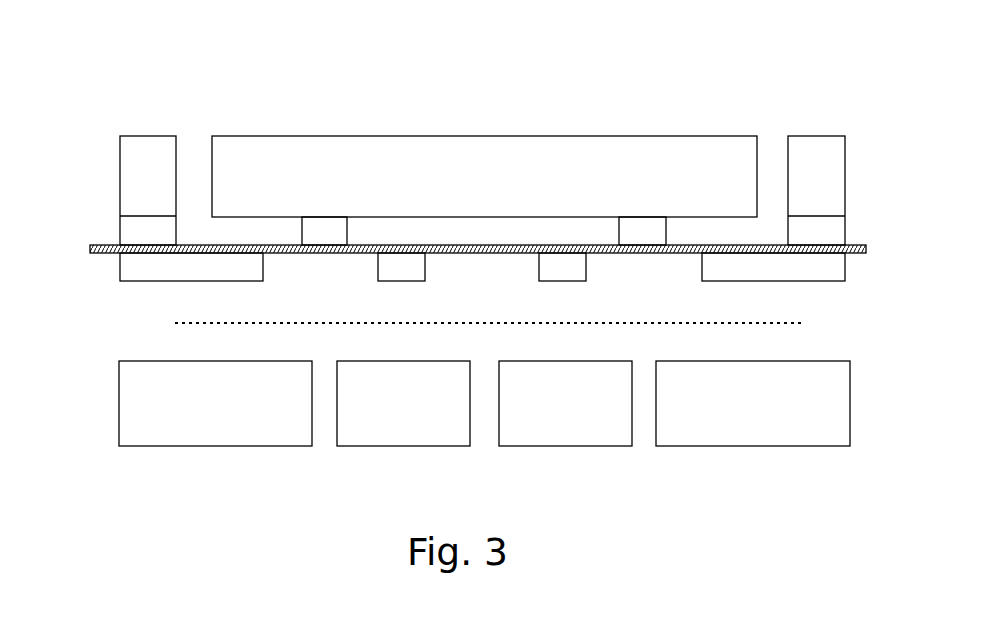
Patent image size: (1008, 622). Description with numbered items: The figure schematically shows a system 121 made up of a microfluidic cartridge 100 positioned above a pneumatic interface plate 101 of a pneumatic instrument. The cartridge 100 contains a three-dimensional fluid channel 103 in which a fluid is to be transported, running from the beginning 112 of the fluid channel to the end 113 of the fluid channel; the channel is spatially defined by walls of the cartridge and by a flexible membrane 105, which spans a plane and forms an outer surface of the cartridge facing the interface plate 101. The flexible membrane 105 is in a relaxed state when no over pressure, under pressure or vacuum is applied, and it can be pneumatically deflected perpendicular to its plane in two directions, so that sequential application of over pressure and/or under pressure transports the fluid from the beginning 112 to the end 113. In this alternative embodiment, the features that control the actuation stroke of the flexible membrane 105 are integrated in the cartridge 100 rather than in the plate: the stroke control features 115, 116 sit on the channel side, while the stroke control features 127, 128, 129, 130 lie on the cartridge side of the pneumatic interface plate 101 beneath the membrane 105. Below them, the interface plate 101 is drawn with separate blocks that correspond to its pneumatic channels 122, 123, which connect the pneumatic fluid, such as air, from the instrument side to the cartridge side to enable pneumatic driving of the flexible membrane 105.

The microfluidic cartridge 100 is at (87, 137).
The pneumatic interface plate 101 is at (93, 365).
The fluid channel 103 is at (595, 232).
The flexible membrane 105 is at (860, 247).
The beginning of the fluid channel 112 is at (193, 152).
The end of the fluid channel 113 is at (777, 147).
The stroke control feature 115 is at (335, 223).
The stroke control feature 116 is at (643, 235).
The system 121 is at (832, 93).
The pneumatic channel 122 is at (650, 433).
The pneumatic channel 123 is at (328, 433).
The stroke control feature 127 is at (217, 263).
The stroke control feature 128 is at (400, 260).
The stroke control feature 129 is at (560, 260).
The stroke control feature 130 is at (757, 263).